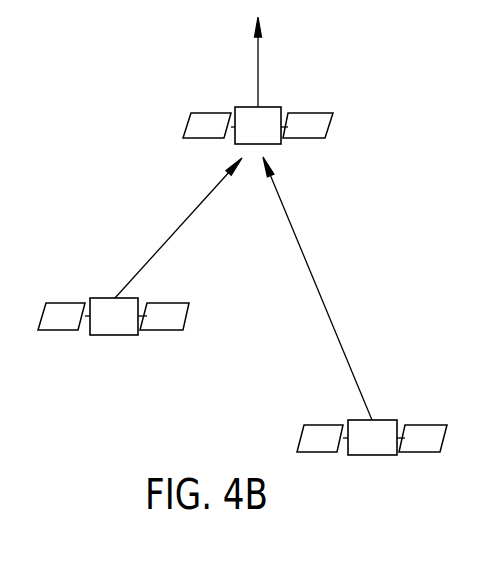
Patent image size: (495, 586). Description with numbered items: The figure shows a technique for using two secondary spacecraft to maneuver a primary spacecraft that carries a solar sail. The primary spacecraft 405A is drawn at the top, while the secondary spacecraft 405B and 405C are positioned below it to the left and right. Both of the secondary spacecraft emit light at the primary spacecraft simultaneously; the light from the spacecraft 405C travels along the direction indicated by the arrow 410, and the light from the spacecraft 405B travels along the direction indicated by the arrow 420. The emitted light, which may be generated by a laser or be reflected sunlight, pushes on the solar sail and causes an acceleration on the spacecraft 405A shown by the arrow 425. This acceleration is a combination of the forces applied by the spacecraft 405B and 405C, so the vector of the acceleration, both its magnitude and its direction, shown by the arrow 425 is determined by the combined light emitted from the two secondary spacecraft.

The primary spacecraft 405A is at (265, 107).
The secondary spacecraft 405B is at (115, 335).
The secondary spacecraft 405C is at (377, 455).
The arrow 410 is at (315, 278).
The arrow 420 is at (177, 228).
The arrow 425 is at (257, 60).